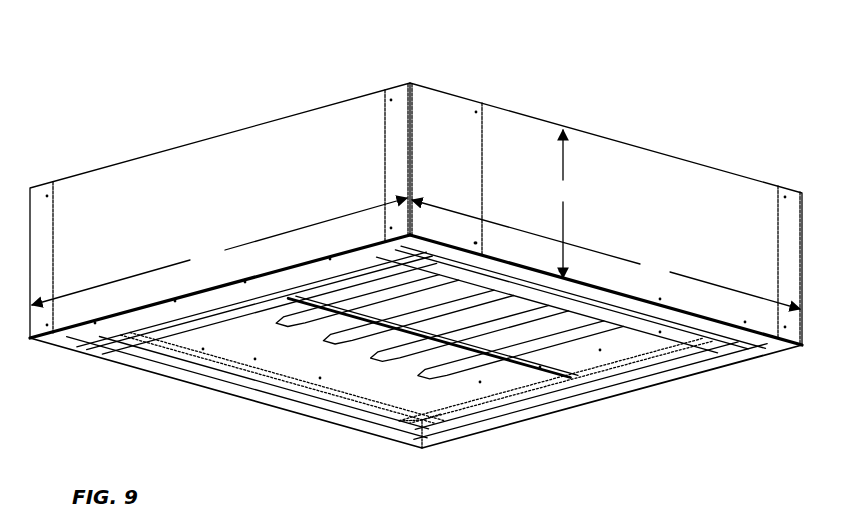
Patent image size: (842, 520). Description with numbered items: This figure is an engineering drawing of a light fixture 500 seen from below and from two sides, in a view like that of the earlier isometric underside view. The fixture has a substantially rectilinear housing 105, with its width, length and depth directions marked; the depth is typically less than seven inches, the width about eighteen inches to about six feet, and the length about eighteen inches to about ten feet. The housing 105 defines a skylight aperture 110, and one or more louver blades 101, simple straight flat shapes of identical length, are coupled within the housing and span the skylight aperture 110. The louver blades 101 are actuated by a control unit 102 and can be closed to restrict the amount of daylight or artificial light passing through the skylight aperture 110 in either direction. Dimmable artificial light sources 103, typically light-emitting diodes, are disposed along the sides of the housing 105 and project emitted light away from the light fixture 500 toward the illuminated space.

The light fixture 500 is at (664, 95).
The control unit 102 is at (255, 152).
The housing 105 is at (718, 185).
The dimmable artificial light source 103 is at (203, 347).
The louver blade 101 is at (445, 362).
The skylight aperture 110 is at (456, 350).